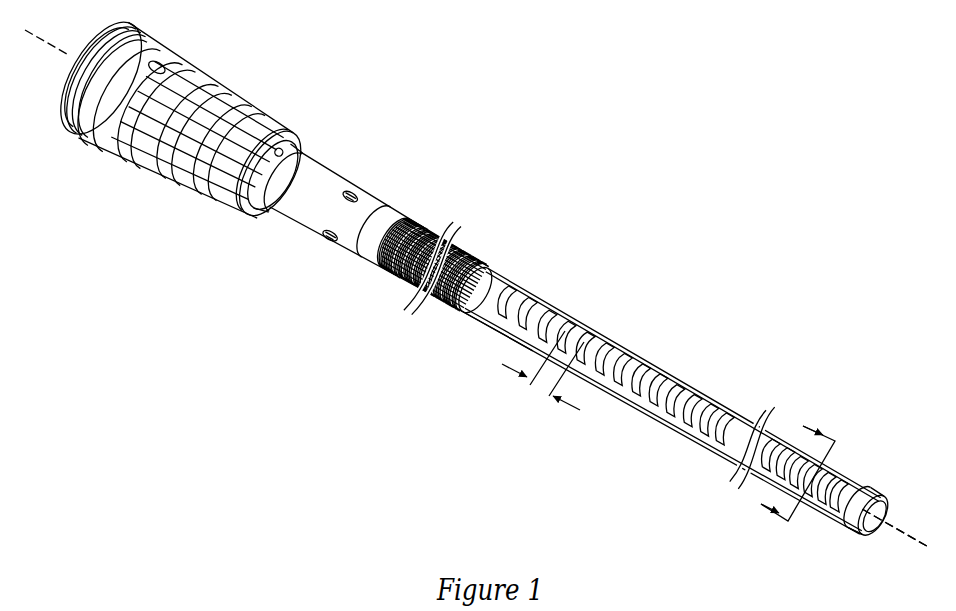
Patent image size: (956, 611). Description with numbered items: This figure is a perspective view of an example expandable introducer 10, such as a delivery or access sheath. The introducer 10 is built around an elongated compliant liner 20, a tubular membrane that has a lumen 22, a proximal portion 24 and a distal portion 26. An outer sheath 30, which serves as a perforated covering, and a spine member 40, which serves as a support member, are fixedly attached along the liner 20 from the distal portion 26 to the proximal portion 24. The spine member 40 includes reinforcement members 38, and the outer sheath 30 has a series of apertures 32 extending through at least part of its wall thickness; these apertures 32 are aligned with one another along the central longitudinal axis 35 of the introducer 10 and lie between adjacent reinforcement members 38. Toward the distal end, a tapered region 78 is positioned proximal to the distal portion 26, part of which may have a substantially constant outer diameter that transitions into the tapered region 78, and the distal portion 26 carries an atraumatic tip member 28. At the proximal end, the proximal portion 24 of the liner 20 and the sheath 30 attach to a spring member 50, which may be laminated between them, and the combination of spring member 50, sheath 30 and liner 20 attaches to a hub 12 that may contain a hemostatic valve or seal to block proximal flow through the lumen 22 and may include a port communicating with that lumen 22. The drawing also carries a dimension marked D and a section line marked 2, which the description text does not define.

The expandable introducer 10 is at (610, 158).
The hub 12 is at (213, 80).
The proximal portion 24 is at (364, 270).
The spring member 50 is at (466, 246).
The spine member 40 is at (549, 287).
The reinforcement members 38 is at (511, 273).
The tapered region 78 is at (496, 350).
The apertures 32 is at (629, 359).
The outer sheath 30 is at (580, 333).
The elongated compliant liner 20 is at (701, 403).
The opening spacing dimension D is at (543, 370).
The section line 2- 2 is at (790, 466).
The lumen 22 is at (876, 536).
The atraumatic tip member 28 is at (877, 494).
The central longitudinal axis 35 is at (903, 538).
The distal portion 26 is at (851, 536).